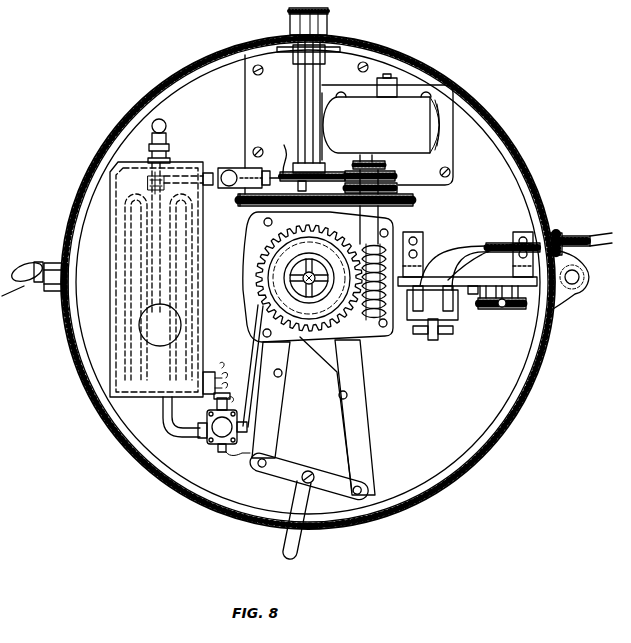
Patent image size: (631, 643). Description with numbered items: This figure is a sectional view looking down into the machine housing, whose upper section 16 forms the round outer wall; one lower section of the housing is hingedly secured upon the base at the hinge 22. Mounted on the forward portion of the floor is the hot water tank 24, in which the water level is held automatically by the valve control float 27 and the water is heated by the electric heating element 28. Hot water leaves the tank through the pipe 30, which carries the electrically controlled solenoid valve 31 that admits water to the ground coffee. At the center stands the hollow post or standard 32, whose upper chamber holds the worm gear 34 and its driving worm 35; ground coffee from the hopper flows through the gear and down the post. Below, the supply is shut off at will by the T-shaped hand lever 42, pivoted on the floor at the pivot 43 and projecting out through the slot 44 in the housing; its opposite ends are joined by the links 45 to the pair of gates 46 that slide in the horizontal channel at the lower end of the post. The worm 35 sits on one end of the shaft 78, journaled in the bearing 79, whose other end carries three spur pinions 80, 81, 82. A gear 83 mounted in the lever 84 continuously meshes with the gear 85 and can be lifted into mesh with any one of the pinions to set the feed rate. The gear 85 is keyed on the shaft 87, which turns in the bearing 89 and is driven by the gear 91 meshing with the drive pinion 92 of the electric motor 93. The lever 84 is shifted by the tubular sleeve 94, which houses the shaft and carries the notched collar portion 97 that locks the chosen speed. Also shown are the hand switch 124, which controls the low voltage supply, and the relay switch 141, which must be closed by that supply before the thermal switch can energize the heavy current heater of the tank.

The upper section of the machine housing 16 is at (505, 148).
The hinge 22 is at (580, 268).
The hot water tank 24 is at (98, 328).
The valve control float 27 is at (144, 320).
The electric heating element 28 is at (128, 216).
The pipe 30 is at (252, 346).
The solenoid valve 31 is at (212, 440).
The hollow post or standard 32 is at (246, 268).
The worm gear 34 is at (332, 314).
The driving worm 35 is at (400, 330).
The T-shaped hand lever 42 is at (300, 548).
The pivot 43 is at (307, 471).
The slot 44 is at (280, 520).
The links 45 is at (270, 418).
The gates 46 is at (284, 354).
The shaft 78 is at (404, 236).
The bearing 79 is at (380, 218).
The spur pinion 80 is at (398, 188).
The spur pinion 81 is at (396, 176).
The spur pinion 82 is at (386, 165).
The gear 83 is at (336, 172).
The lever 84 is at (318, 166).
The gear 85 is at (283, 170).
The shaft 87 is at (298, 186).
The bearing 89 is at (295, 57).
The gear 91 is at (240, 200).
The drive pinion 92 is at (415, 204).
The electric motor 93 is at (428, 126).
The tubular sleeve 94 is at (299, 92).
The collar portion 97 is at (291, 22).
The hand switch 124 is at (494, 310).
The relay switch 141 is at (455, 330).